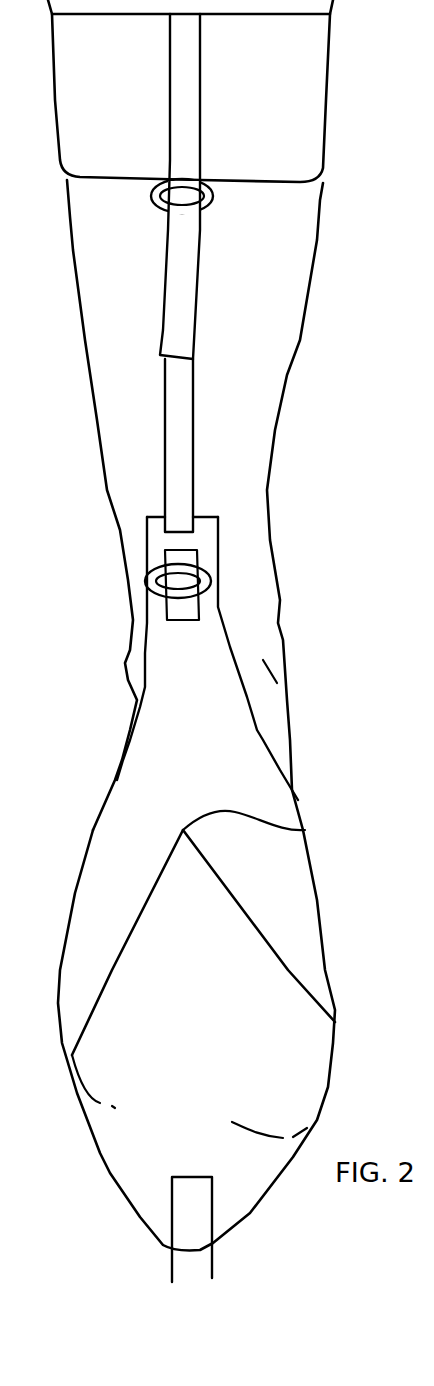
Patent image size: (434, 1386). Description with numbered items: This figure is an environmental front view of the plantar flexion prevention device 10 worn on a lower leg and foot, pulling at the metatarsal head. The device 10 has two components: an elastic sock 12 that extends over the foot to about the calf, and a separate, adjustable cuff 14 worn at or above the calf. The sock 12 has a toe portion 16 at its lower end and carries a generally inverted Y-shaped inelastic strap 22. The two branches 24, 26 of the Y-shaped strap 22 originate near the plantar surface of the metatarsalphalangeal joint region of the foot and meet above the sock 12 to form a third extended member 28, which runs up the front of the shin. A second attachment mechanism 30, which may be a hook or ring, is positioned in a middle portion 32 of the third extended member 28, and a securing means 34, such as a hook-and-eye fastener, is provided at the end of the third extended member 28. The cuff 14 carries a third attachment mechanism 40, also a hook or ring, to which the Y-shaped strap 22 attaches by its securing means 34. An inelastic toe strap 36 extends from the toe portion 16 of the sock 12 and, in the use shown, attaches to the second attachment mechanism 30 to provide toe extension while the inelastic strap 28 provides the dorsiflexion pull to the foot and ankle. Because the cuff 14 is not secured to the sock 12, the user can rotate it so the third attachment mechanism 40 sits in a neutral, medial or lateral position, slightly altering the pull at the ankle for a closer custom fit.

The plantar flexion prevention device 10 is at (390, 17).
The elastic sock 12 is at (286, 385).
The cuff 14 is at (330, 123).
The toe portion 16 is at (333, 1073).
The inverted Y-shaped inelastic strap 22 is at (305, 830).
The branch 24 is at (318, 900).
The branch 26 is at (75, 893).
The third extended member 28 is at (195, 427).
The second attachment mechanism 30 is at (212, 580).
The middle portion 32 is at (216, 520).
The securing means 34 is at (161, 348).
The inelastic toe strap 36 is at (214, 1262).
The third attachment mechanism 40 is at (213, 200).